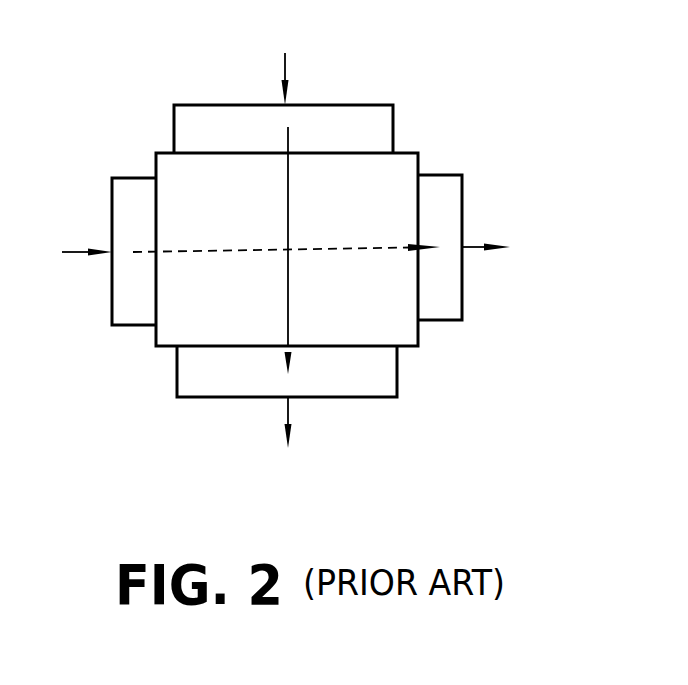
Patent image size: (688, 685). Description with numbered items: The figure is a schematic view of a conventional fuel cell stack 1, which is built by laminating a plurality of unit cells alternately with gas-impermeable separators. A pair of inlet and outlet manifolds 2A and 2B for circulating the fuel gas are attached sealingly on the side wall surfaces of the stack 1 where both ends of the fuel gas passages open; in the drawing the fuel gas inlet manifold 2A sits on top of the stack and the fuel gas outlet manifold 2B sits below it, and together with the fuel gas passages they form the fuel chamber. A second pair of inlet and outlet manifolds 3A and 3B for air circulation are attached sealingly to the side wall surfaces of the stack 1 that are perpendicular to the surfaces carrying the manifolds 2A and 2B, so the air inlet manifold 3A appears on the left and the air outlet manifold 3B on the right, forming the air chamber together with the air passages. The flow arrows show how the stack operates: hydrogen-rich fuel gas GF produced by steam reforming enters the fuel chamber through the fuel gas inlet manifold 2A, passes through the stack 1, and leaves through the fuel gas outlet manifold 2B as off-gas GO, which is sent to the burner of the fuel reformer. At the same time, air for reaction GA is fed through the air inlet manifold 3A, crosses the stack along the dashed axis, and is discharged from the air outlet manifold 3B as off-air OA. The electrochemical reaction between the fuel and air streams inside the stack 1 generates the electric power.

The fuel cell stack 1 is at (158, 146).
The fuel gas inlet manifold 2A is at (340, 112).
The fuel gas outlet manifold 2B is at (360, 387).
The air inlet manifold 3A is at (127, 188).
The air outlet manifold 3B is at (440, 177).
The hydrogen-rich fuel gas GF is at (286, 62).
The off-gas GO is at (287, 417).
The air for reaction GA is at (81, 253).
The off-air OA is at (477, 245).